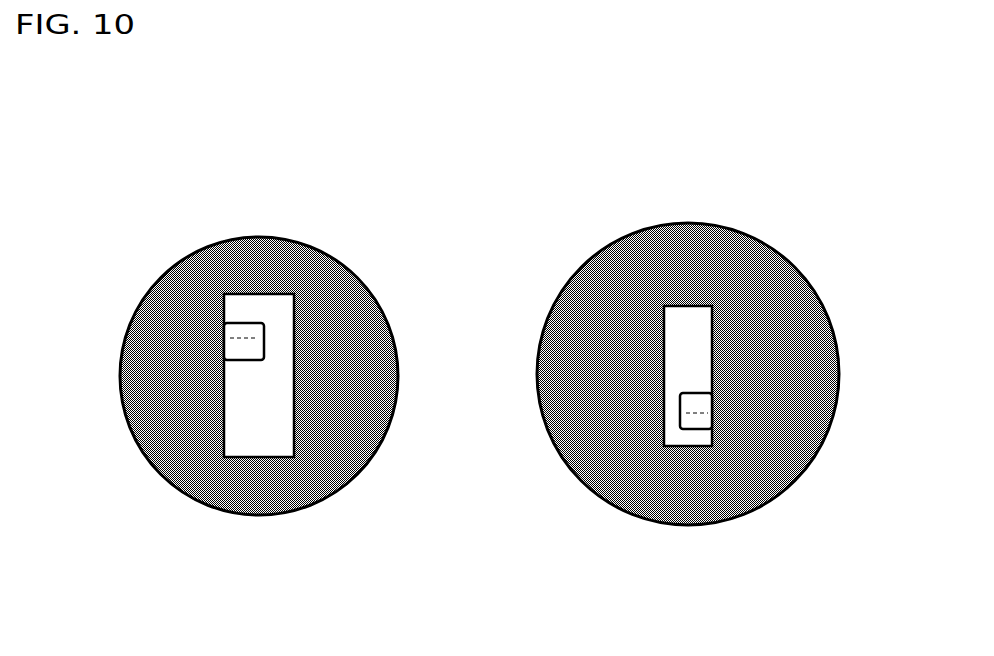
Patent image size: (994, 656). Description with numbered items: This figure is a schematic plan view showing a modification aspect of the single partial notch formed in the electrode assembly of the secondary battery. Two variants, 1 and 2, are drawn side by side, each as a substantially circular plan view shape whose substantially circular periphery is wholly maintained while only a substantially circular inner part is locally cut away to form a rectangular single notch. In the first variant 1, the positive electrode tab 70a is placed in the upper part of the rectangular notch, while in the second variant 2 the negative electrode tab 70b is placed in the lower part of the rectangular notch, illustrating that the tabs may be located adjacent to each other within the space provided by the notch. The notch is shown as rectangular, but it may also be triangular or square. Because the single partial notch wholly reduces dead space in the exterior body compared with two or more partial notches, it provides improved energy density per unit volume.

The first electronic device (smartwatch with wireless module in first position) 1 is at (165, 228).
The second electronic device (smartwatch with wireless module in second position) 2 is at (818, 243).
The positive electrode tab 70a is at (254, 323).
The negative electrode tab 70b is at (697, 422).